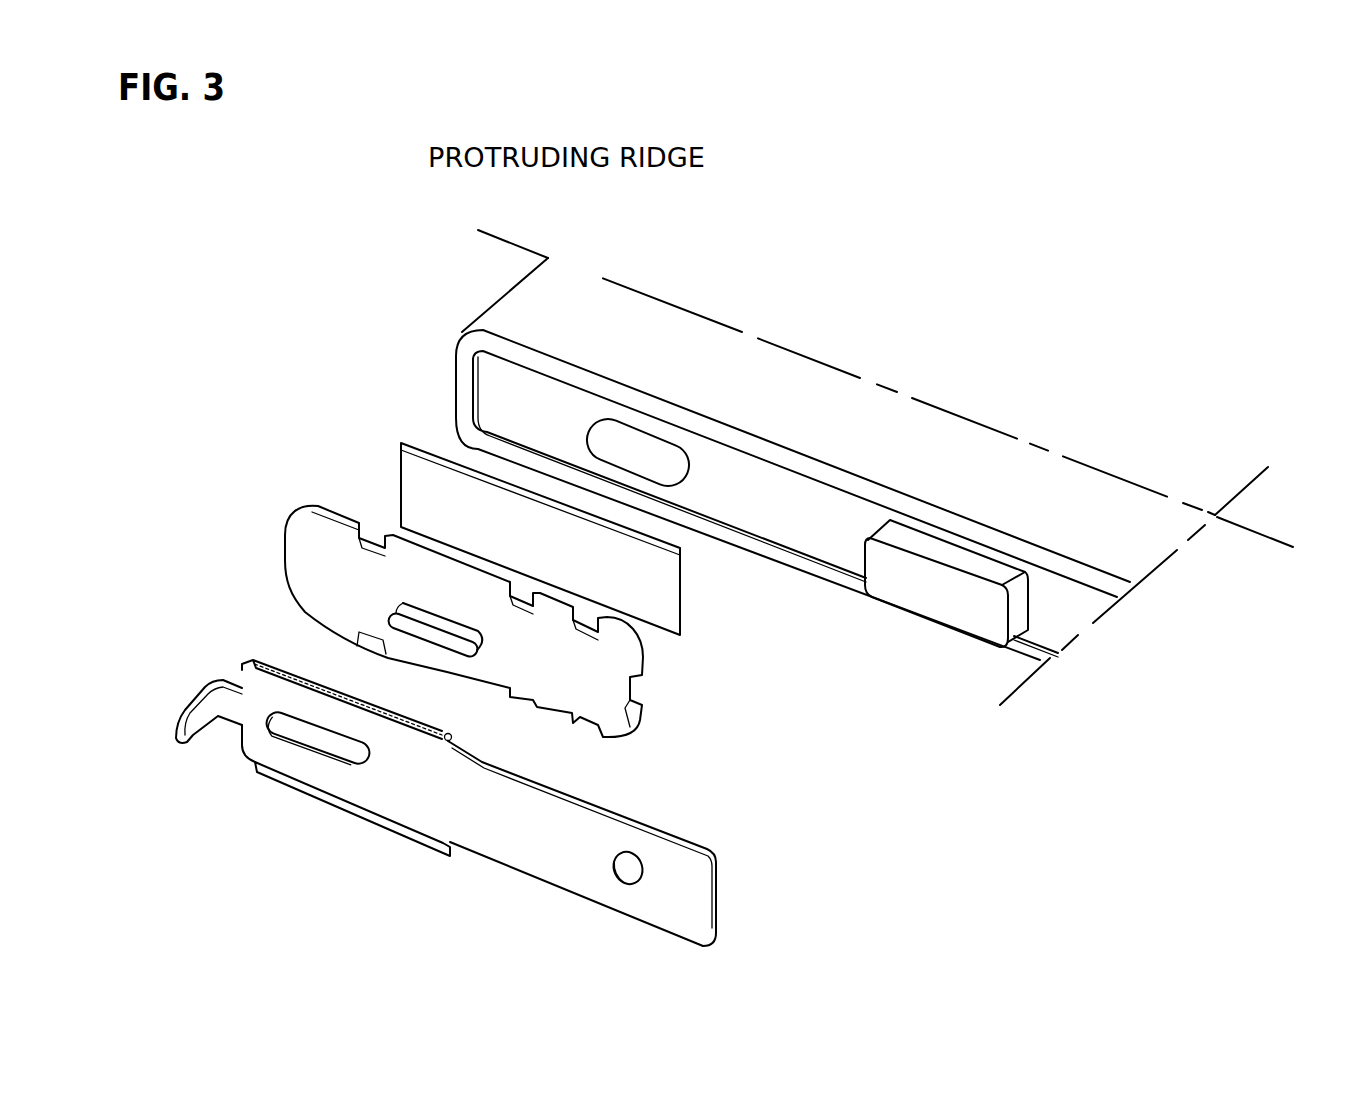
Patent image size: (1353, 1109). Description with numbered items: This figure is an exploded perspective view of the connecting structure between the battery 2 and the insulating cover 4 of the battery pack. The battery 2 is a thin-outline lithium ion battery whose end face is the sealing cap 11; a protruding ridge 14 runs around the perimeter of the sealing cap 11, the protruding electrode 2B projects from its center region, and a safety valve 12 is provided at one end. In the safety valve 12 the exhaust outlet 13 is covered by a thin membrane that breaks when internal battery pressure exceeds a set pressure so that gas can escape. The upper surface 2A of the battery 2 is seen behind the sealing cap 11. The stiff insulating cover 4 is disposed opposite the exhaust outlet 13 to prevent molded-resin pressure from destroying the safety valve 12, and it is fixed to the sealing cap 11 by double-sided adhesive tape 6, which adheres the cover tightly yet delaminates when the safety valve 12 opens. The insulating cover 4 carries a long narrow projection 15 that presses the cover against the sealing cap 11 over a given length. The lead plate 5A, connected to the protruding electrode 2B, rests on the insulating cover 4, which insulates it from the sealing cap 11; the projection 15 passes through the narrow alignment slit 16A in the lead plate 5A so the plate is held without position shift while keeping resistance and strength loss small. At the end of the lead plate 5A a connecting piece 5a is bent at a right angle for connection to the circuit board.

The battery 2 is at (410, 272).
The upper surface of battery pack 2A is at (873, 437).
The protruding electrode 2B is at (928, 588).
The insulating cover 4 is at (414, 607).
The lead plate 5A is at (424, 827).
The connecting piece 5a is at (194, 736).
The double-sided adhesive tape 6 is at (427, 500).
The sealing cap 11 is at (793, 425).
The safety valve 12 is at (620, 435).
The exhaust outlet 13 is at (663, 433).
The protruding ridge 14 is at (540, 367).
The projection 15 is at (417, 630).
The alignment slit 16A is at (323, 742).